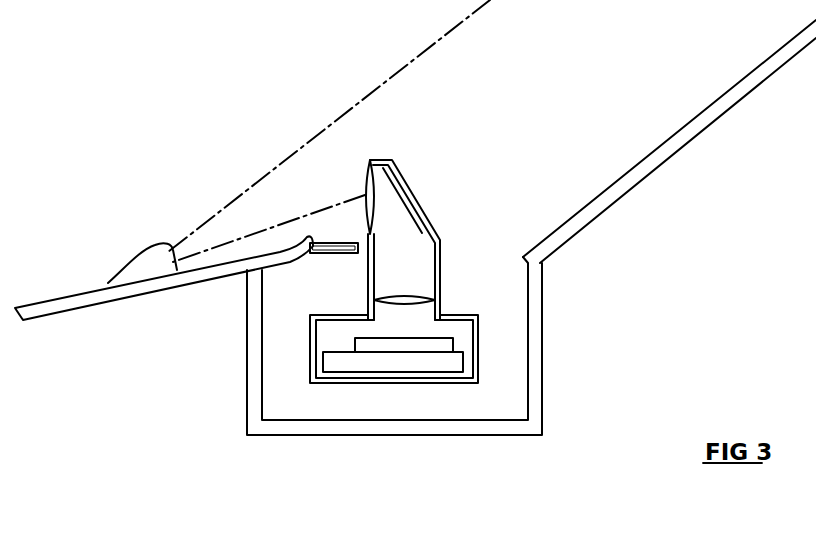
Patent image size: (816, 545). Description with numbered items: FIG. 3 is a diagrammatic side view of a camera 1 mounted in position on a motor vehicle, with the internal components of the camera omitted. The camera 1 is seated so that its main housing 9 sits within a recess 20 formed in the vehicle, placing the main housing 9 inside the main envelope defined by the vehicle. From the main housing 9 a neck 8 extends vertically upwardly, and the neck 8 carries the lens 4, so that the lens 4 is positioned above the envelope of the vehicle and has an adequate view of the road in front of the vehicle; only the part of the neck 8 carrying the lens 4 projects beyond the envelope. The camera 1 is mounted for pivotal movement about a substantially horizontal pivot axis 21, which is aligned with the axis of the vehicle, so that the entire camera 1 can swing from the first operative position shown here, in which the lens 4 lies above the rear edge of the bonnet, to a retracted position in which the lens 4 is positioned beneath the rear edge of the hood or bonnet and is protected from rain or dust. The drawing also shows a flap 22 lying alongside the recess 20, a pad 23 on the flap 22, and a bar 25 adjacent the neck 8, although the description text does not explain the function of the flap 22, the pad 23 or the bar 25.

The camera 1 is at (455, 191).
The lens 4 is at (368, 158).
The neck 8 is at (440, 265).
The main housing 9 is at (478, 342).
The recess 20 is at (402, 435).
The pivot axis 21 is at (660, 165).
The flap 22 is at (190, 275).
The pad 23 is at (148, 244).
The stop bar 25 is at (337, 243).